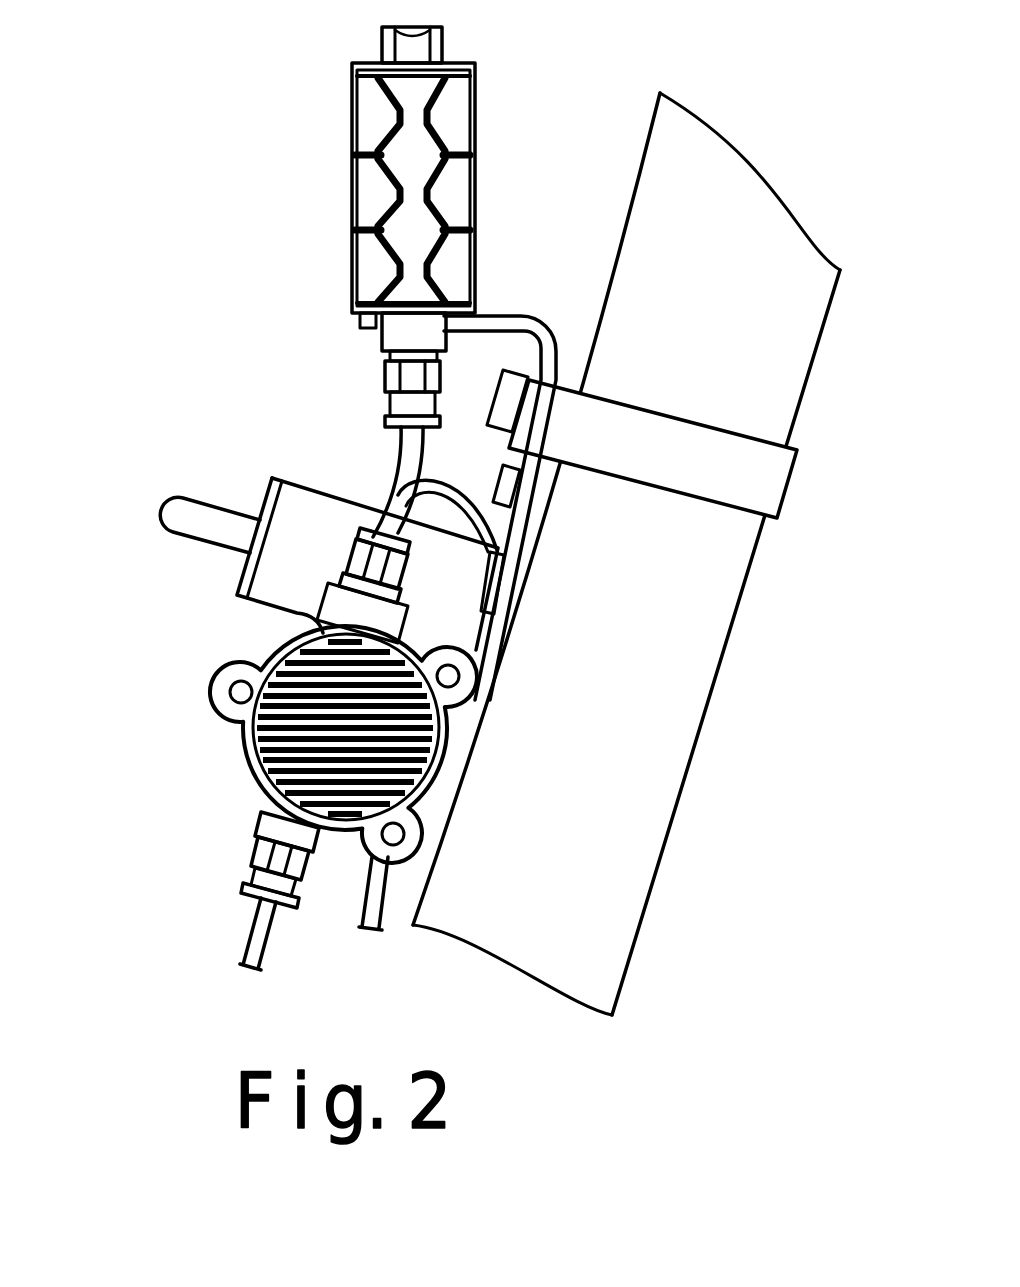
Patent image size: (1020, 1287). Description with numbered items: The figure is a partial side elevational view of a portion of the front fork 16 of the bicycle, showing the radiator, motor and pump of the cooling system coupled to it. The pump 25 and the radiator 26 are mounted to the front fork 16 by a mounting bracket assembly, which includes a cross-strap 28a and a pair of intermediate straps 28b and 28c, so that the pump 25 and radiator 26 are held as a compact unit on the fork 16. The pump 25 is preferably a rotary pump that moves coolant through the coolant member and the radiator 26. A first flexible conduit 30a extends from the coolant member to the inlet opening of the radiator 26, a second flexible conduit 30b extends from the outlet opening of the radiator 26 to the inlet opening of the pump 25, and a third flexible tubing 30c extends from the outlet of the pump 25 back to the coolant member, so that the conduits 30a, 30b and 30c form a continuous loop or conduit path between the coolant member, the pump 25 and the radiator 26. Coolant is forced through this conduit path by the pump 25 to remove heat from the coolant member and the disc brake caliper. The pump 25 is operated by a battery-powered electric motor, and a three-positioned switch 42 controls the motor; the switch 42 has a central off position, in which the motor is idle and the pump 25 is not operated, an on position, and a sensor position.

The front fork 16 is at (810, 380).
The pump 25 is at (232, 749).
The radiator 26 is at (340, 190).
The cross-strap 28a is at (660, 407).
The intermediate strap 28b is at (504, 505).
The intermediate strap 28c is at (500, 314).
The first flexible conduit 30a is at (364, 887).
The second flexible conduit 30b is at (392, 467).
The third flexible tubing 30c is at (247, 951).
The three-positioned switch 42 is at (178, 493).